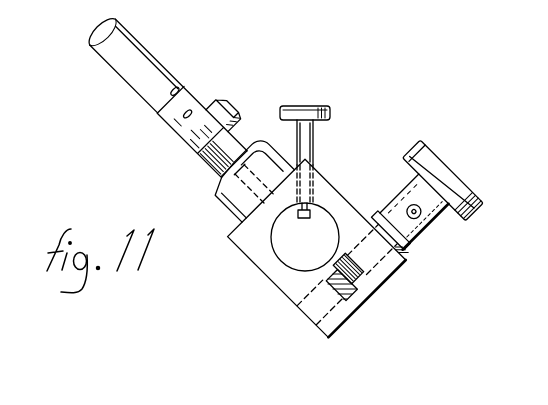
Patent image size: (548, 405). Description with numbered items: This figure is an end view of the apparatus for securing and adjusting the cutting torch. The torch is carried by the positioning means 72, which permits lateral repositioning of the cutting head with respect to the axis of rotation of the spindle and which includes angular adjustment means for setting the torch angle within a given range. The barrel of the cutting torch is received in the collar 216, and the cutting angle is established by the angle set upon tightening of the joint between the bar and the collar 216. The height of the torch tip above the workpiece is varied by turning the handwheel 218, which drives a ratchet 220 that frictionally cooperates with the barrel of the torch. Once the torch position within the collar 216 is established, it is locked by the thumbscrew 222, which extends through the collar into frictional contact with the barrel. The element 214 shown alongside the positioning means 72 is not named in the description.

The positioning means 72 is at (162, 65).
The sleeve 214 is at (188, 149).
The collar 216 is at (336, 194).
The handwheel 218 is at (424, 139).
The ratchet 220 is at (346, 284).
The thumbscrew 222 is at (325, 106).